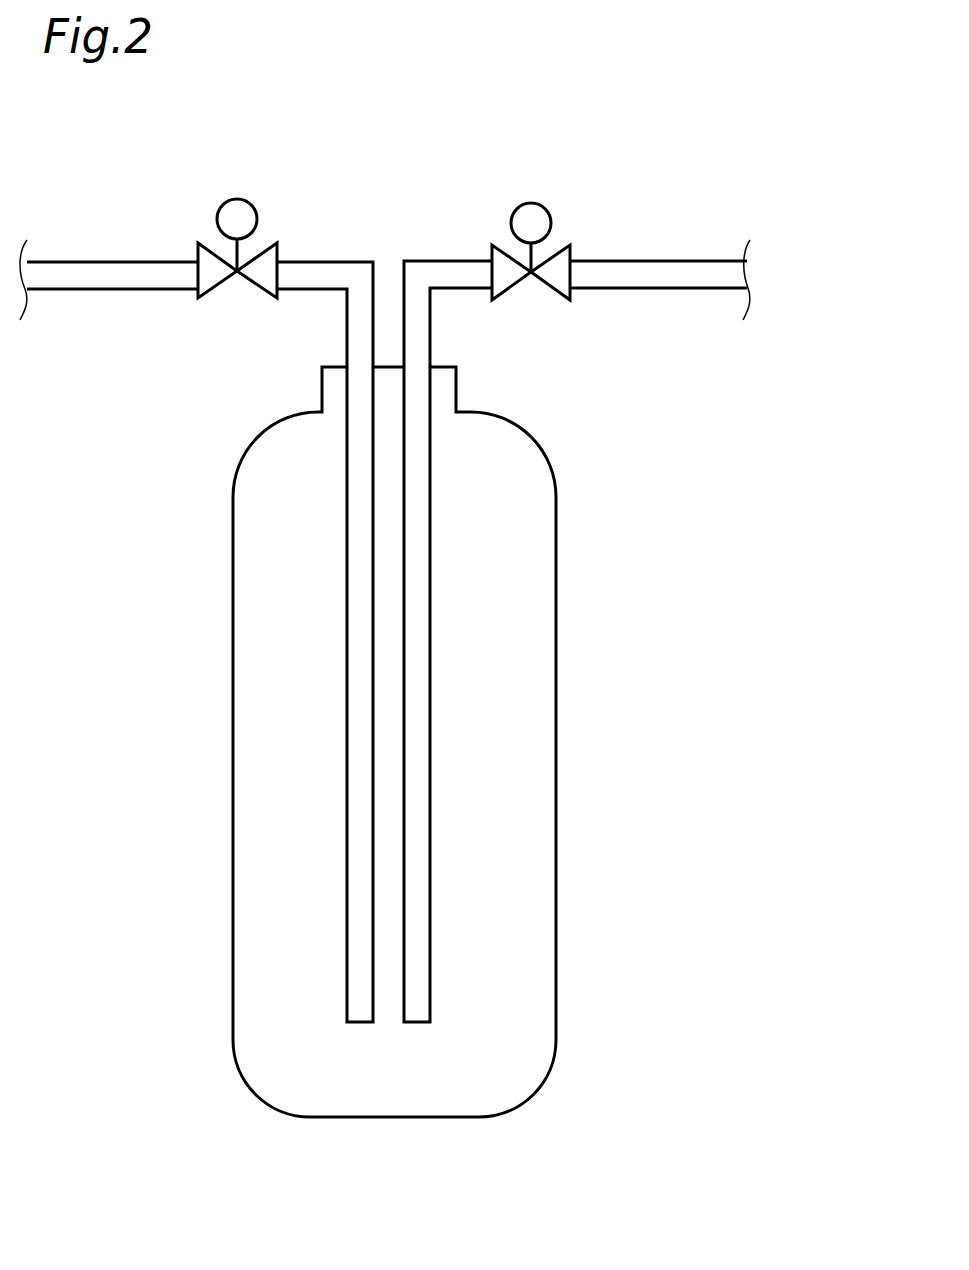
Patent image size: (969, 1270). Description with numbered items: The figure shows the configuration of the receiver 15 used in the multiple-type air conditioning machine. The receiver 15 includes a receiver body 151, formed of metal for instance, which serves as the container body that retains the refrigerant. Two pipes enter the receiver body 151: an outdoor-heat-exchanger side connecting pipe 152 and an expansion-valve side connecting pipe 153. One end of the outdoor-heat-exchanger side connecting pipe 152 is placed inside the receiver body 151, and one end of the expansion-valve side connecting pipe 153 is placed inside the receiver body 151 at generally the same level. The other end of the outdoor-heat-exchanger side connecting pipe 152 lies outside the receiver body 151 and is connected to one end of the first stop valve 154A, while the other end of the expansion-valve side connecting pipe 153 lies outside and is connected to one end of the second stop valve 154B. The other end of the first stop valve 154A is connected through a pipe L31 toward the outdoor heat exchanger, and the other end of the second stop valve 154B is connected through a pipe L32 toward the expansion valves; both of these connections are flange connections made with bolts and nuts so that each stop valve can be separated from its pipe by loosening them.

The receiver 15 is at (461, 742).
The receiver body 151 is at (556, 727).
The outdoor-heat-exchanger side connecting pipe 152 is at (325, 262).
The expansion-valve side connecting pipe 153 is at (438, 261).
The first stop valve 154A is at (237, 199).
The second stop valve 154B is at (531, 203).
The pipe L31 is at (99, 262).
The pipe L32 is at (658, 261).